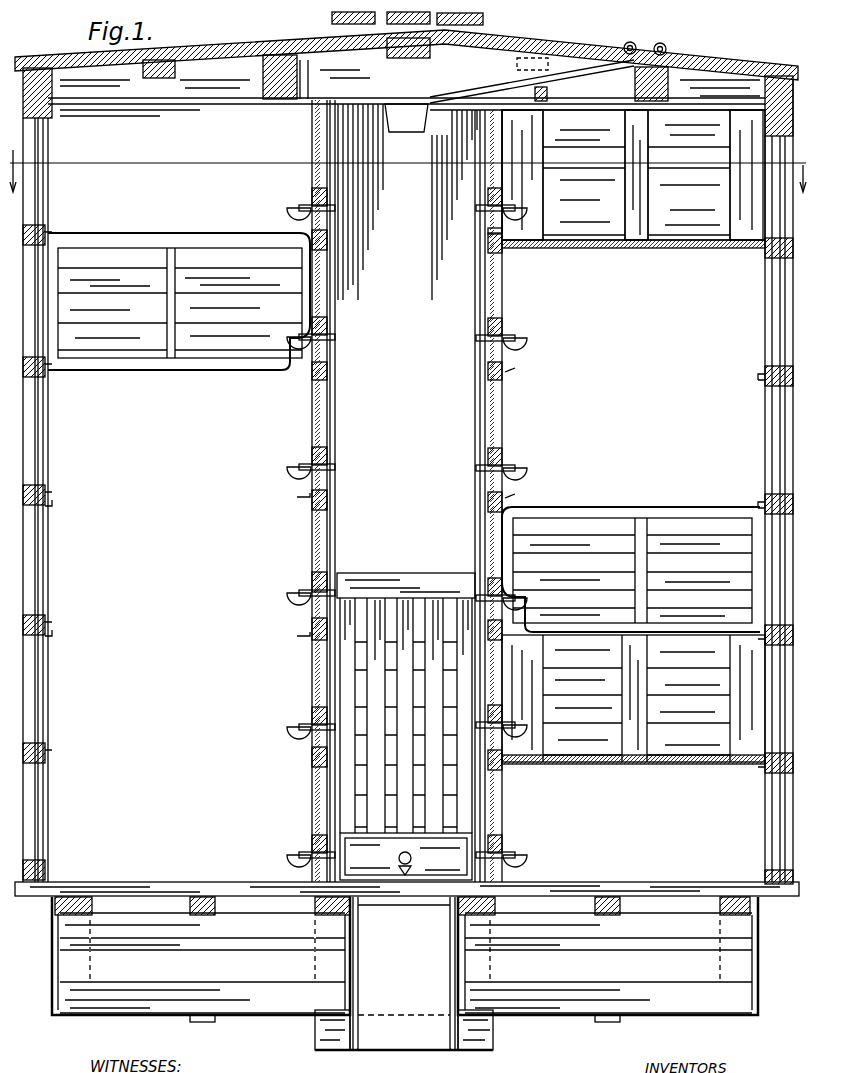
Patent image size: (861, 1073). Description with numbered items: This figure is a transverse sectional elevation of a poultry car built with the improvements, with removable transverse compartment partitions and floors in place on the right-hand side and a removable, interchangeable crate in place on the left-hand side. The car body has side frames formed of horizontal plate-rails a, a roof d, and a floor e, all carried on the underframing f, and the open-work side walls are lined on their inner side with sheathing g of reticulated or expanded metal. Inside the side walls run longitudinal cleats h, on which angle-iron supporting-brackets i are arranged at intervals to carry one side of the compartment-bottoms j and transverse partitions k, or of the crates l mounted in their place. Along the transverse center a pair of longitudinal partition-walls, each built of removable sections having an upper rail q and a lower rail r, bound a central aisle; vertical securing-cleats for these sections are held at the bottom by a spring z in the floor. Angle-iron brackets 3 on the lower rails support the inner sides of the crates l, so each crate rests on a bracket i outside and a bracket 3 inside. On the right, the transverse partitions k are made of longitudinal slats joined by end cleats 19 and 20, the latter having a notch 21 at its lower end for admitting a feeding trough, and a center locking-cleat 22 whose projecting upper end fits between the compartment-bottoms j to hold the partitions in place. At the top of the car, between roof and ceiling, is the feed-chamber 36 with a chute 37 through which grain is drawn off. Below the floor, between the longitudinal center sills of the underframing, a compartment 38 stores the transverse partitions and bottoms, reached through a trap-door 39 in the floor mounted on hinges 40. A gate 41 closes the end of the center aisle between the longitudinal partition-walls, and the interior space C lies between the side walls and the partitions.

The roof d is at (705, 72).
The floor e is at (652, 895).
The underframing f is at (690, 990).
The sheathing g is at (775, 210).
The horizontal plate-rails a is at (30, 505).
The longitudinal cleats h is at (48, 490).
The supporting-brackets i is at (50, 500).
The compartment-bottoms j is at (722, 248).
The transverse partitions k is at (680, 198).
The crates l is at (172, 268).
The main chamber C is at (629, 376).
The upper rail q is at (327, 243).
The lower rail r is at (327, 325).
The spring z is at (537, 490).
The brackets 3 is at (302, 462).
The end cleat 19 is at (735, 158).
The end cleat 20 is at (536, 165).
The notch 21 is at (488, 232).
The center locking-cleat 22 is at (641, 165).
The feed-chamber 36 is at (407, 186).
The chute 37 is at (410, 118).
The compartment 38 is at (404, 973).
The trap-door 39 is at (410, 897).
The hinges 40 is at (354, 880).
The gate 41 is at (420, 578).